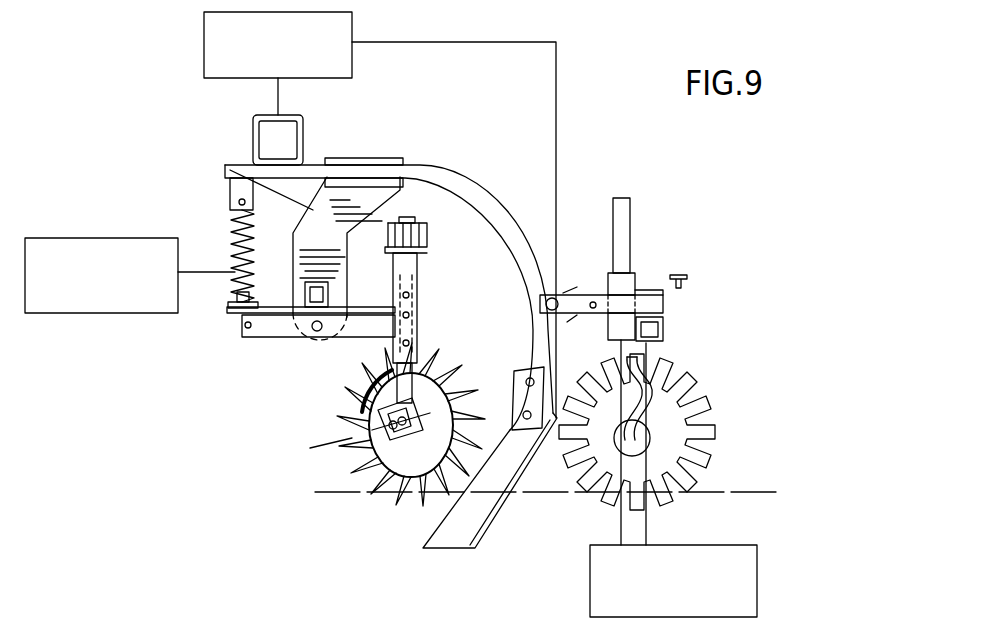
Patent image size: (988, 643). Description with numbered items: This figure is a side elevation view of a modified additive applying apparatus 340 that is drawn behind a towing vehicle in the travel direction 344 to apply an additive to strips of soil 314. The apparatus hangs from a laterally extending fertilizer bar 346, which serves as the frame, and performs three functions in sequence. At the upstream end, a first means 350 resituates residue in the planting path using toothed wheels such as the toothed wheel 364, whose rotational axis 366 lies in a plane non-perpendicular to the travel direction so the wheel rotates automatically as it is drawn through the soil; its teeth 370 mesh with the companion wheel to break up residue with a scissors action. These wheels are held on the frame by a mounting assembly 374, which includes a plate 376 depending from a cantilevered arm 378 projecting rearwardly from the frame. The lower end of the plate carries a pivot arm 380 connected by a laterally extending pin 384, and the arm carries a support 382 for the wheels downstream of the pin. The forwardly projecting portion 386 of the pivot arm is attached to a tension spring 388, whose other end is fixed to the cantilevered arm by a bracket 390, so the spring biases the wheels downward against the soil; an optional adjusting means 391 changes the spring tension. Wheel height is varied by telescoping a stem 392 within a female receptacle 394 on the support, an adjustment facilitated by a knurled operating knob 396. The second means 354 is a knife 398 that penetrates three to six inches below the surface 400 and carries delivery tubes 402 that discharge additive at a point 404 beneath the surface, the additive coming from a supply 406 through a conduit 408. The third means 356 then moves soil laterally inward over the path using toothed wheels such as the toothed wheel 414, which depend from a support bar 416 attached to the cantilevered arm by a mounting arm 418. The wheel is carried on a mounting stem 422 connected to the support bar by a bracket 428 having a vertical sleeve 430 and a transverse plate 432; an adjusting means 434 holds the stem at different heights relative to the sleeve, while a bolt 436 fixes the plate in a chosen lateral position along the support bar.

The soil 314 is at (757, 520).
The additive applying apparatus 340 is at (563, 134).
The travel direction 344 is at (218, 408).
The fertilizer bar 346 is at (304, 128).
The first means 350 is at (440, 262).
The second means 354 is at (541, 543).
The third means 356 is at (706, 374).
The toothed wheel 364 is at (357, 405).
The rotational axis 366 is at (328, 453).
The teeth 370 is at (452, 372).
The mounting assembly 374 is at (270, 276).
The plate 376 is at (313, 210).
The cantilevered arm 378 is at (312, 173).
The pivot arm 380 is at (377, 313).
The support 382 is at (414, 314).
The pin 384 is at (307, 335).
The forwardly projecting portion 386 is at (263, 328).
The tension spring 388 is at (233, 226).
The bracket 390 is at (230, 200).
The adjusting means 391 is at (116, 306).
The stem 392 is at (362, 376).
The female receptacle 394 is at (418, 290).
The knurled operating knob 396 is at (437, 215).
The knife 398 is at (443, 547).
The surface 400 is at (722, 492).
The delivery tubes 402 is at (510, 493).
The point 404 is at (475, 548).
The supply 406 is at (297, 67).
The conduit 408 is at (548, 42).
The toothed wheel 414 is at (702, 428).
The support bar 416 is at (664, 338).
The mounting arm 418 is at (600, 296).
The mounting stem 422 is at (628, 199).
The bracket 428 is at (636, 292).
The sleeve 430 is at (608, 285).
The transverse plate 432 is at (664, 311).
The adjusting means 434 is at (690, 610).
The bolt 436 is at (690, 274).